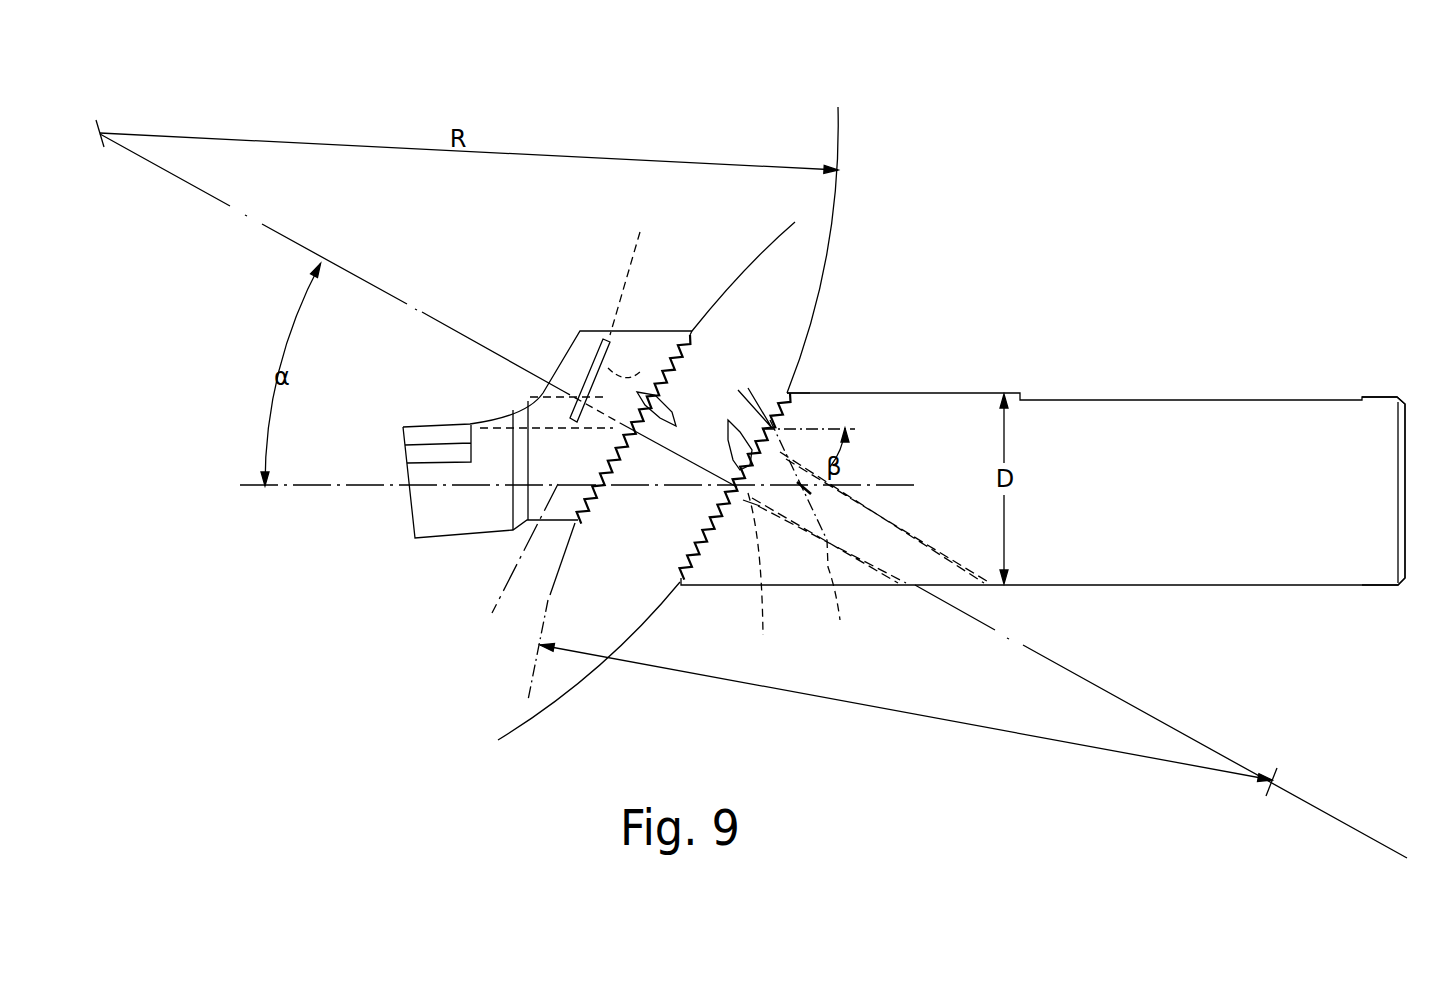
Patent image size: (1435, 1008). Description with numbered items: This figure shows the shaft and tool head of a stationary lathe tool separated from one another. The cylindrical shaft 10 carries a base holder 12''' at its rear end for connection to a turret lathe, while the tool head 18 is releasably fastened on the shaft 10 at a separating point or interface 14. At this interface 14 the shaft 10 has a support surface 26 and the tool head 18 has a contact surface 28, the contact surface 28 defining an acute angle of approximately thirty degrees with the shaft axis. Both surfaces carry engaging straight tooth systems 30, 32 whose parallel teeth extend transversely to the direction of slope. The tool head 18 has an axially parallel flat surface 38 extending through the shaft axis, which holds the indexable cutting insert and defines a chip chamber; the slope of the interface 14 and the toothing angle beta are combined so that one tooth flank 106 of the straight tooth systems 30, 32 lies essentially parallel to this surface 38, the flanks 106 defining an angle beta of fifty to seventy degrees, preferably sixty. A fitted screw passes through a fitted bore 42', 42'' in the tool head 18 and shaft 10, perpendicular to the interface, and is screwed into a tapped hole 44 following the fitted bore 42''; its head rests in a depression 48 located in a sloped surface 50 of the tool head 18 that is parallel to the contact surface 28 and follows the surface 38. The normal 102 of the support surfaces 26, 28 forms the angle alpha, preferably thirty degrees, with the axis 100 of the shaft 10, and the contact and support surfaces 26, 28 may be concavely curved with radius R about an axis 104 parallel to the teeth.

The cylindrical shaft 10 is at (962, 430).
The base holder 12''' is at (1372, 461).
The separating point or interface 14 is at (771, 388).
The tool head 18 is at (472, 518).
The support surface 26 is at (693, 557).
The contact surface 28 is at (600, 488).
The straight tooth system 30 is at (733, 432).
The straight tooth system 32 is at (670, 416).
The flat surface 38 is at (470, 437).
The fitted bore 42' is at (594, 452).
The fitted bore 42'' is at (763, 578).
The tapped hole 44 is at (840, 620).
The depression 48 is at (585, 345).
The sloped surface 50 is at (580, 331).
The axis of the shaft 100 is at (580, 565).
The normal of the support surfaces 102 is at (373, 283).
The axis of concave curvature 104 is at (104, 118).
The tooth flank 106 is at (749, 393).